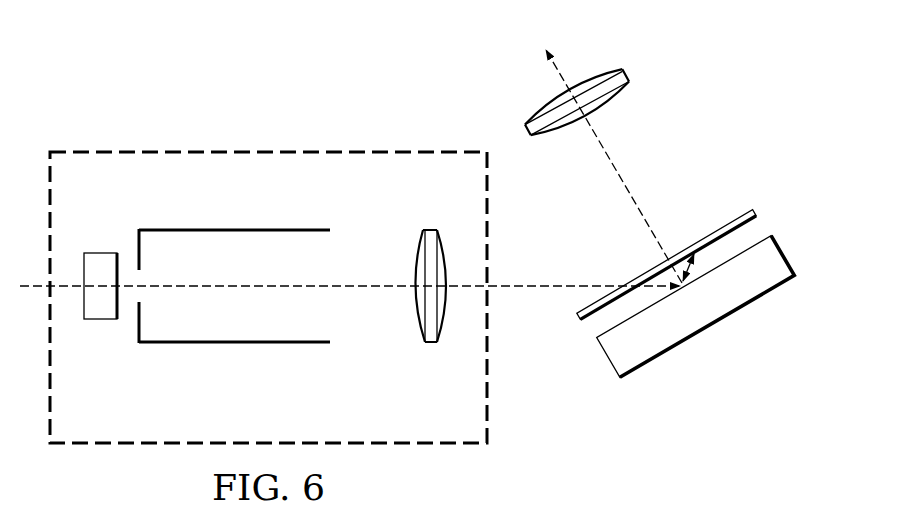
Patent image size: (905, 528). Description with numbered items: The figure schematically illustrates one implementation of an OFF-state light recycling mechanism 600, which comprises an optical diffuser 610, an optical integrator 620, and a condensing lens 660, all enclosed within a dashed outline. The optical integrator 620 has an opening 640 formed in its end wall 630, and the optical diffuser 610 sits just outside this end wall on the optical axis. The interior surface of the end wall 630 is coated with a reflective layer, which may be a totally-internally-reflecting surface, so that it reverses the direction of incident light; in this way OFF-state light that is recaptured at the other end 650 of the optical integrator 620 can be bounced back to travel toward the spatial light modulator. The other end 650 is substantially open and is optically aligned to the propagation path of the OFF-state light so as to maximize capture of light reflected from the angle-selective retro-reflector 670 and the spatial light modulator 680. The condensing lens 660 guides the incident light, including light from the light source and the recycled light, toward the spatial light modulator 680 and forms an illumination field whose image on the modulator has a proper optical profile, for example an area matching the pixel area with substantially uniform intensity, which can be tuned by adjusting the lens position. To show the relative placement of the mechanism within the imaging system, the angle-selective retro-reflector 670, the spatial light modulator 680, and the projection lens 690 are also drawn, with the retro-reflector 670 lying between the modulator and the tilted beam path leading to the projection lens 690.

The OFF-state light recycling mechanism 600 is at (186, 149).
The optical diffuser 610 is at (103, 253).
The optical integrator 620 is at (216, 354).
The end wall 630 is at (137, 332).
The opening 640 is at (152, 303).
The other end 650 is at (326, 329).
The condensing lens 660 is at (430, 230).
The angle-selective retro-reflector 670 is at (722, 222).
The spatial light modulator 680 is at (737, 301).
The projection lens 690 is at (630, 78).